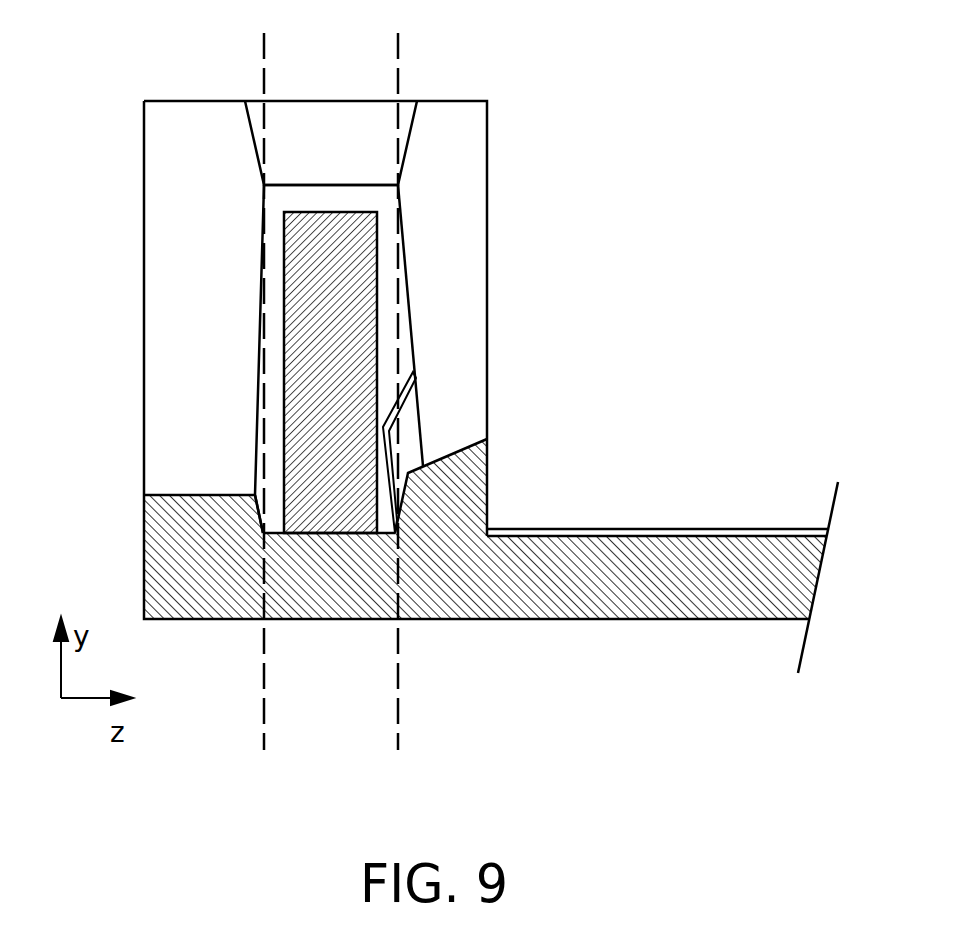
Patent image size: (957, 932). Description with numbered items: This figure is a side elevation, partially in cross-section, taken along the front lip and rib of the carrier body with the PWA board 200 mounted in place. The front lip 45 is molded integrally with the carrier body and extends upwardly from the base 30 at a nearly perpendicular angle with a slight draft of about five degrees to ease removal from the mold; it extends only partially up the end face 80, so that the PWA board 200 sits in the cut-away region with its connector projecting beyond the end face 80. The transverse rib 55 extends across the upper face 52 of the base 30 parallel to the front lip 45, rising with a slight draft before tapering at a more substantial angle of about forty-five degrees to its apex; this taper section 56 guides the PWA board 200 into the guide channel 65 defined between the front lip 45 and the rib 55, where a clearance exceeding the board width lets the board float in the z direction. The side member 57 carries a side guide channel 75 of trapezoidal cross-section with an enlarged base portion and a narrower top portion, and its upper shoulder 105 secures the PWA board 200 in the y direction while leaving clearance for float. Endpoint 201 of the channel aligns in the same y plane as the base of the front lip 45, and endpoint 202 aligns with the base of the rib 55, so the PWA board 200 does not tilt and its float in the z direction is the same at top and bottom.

The base 30 is at (533, 620).
The front lip 45 is at (182, 493).
The upper face 52 is at (812, 557).
The rib 55 is at (489, 472).
The taper section 56 is at (458, 447).
The side member 57 is at (170, 220).
The guide channel 65 is at (273, 537).
The side guide channel 75 is at (373, 199).
The end face 80 is at (143, 318).
The upper shoulder 105 is at (331, 185).
The PWA board 200 is at (378, 297).
The endpoint 201 is at (264, 185).
The endpoint 202 is at (398, 185).